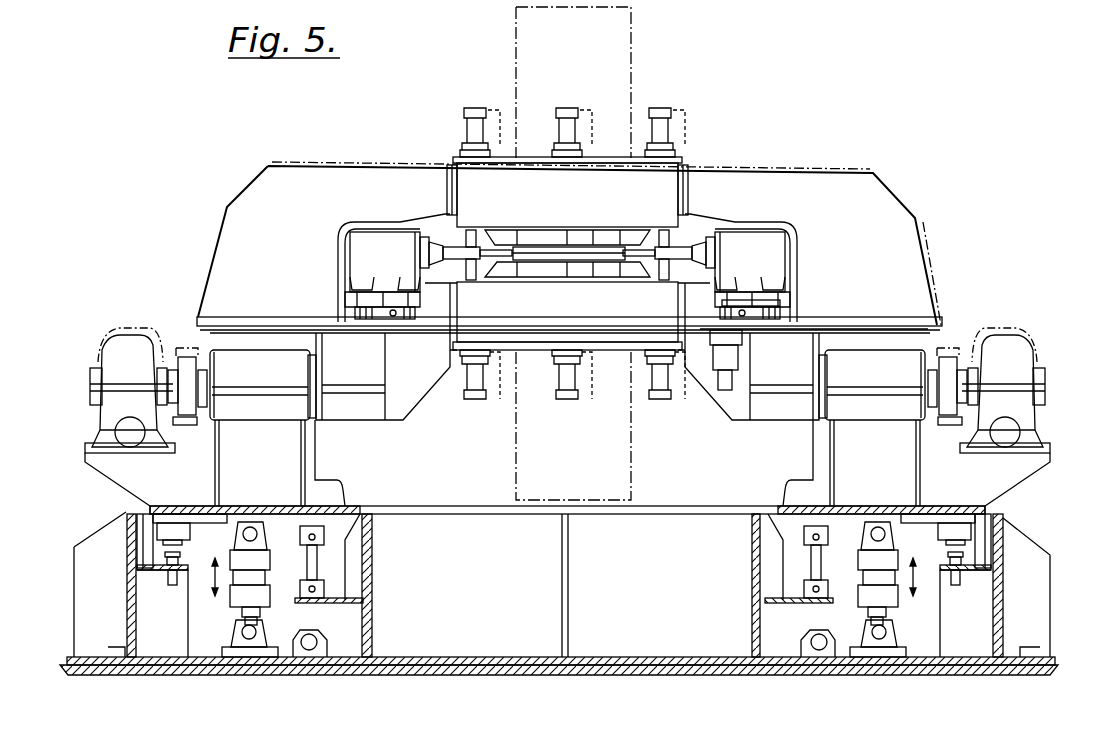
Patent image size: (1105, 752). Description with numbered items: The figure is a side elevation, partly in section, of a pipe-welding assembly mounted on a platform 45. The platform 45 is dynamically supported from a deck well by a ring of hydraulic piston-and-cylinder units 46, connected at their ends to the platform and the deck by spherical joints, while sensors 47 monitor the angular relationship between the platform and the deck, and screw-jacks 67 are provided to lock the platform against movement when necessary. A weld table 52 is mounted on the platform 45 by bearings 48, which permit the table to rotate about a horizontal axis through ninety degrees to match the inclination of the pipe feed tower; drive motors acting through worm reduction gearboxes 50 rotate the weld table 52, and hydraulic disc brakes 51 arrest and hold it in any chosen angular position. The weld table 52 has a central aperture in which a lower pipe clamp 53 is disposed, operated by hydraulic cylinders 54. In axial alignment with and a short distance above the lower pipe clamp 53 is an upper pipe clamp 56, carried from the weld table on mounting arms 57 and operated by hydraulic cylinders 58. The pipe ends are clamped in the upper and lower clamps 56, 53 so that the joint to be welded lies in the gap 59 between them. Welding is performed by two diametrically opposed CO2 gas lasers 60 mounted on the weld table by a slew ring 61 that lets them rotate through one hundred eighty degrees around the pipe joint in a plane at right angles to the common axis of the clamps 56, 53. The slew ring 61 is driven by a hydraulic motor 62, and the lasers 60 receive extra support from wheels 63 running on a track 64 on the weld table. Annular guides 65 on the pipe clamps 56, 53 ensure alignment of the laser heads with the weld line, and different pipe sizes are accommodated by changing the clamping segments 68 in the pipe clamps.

The platform 45 is at (150, 505).
The hydraulic piston-and-cylinder units 46 is at (231, 597).
The sensors 47 is at (377, 570).
The bearings 48 is at (283, 413).
The worm reduction gearboxes 50 is at (127, 345).
The hydraulic disc brakes 51 is at (189, 400).
The weld table 52 is at (196, 336).
The lower pipe clamp 53 is at (556, 332).
The hydraulic cylinders 54 is at (653, 377).
The upper pipe clamp 56 is at (600, 170).
The mounting arms 57 is at (386, 183).
The hydraulic cylinders 58 is at (573, 112).
The gap 59 is at (558, 253).
The CO2 gas lasers 60 is at (352, 258).
The slew ring 61 is at (713, 345).
The hydraulic motor 62 is at (725, 365).
The wheels 63 is at (783, 312).
The track 64 is at (776, 324).
The annular guides 65 is at (471, 266).
The screw-jacks 67 is at (182, 560).
The clamping segments 68 is at (608, 240).